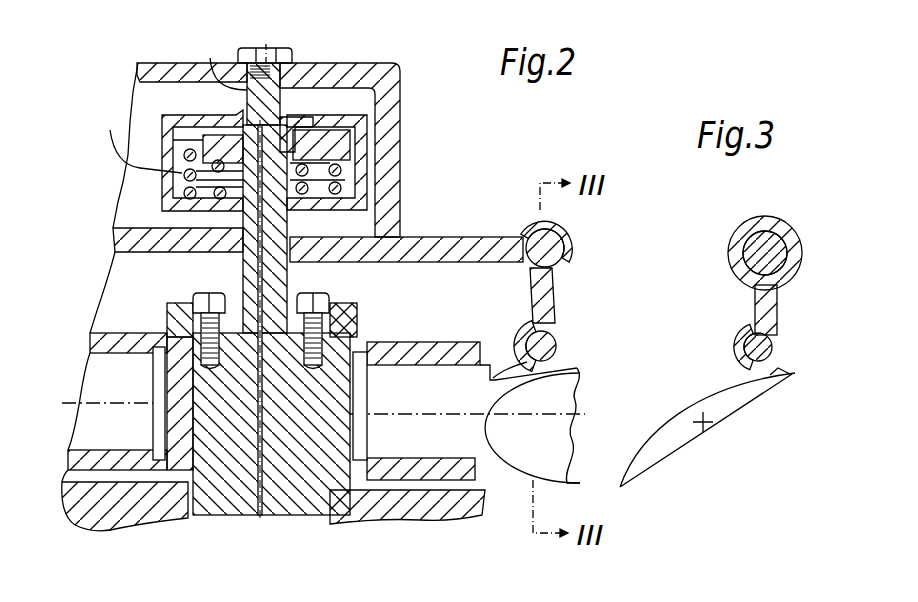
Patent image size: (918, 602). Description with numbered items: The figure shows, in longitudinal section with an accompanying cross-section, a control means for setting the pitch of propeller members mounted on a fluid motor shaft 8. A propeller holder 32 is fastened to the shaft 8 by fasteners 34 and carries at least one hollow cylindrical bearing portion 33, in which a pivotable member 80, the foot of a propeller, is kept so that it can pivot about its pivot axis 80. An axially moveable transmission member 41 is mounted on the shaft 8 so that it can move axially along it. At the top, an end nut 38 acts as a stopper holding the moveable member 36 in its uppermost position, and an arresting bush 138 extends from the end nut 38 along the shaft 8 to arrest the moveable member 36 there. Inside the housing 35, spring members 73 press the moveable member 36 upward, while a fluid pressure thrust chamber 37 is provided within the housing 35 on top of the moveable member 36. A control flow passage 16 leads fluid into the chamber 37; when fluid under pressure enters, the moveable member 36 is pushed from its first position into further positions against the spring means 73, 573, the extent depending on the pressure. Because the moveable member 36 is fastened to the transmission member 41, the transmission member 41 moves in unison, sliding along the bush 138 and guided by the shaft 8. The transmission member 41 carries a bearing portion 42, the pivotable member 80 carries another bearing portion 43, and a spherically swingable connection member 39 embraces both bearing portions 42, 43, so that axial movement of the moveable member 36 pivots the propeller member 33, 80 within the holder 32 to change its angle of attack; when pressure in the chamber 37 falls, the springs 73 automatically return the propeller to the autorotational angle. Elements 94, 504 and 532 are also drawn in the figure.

In FIG. 2, the shaft 8 is at (302, 515).
In FIG. 2, the control flow passage 16 is at (253, 513).
In FIG. 2, the propeller holder 32 is at (400, 350).
In FIG. 2, the bearing portion 33 is at (95, 367).
In FIG. 3, the bearing portion 33 is at (727, 393).
In FIG. 2, the fasteners 34 is at (313, 300).
In FIG. 2, the housing 35 is at (362, 176).
In FIG. 2, the axially moveable member 36 is at (350, 143).
In FIG. 2, the fluid pressure thrust chamber 37 is at (340, 117).
In FIG. 2, the end nut 38 is at (292, 78).
In FIG. 2, the connection member 39 is at (552, 303).
In FIG. 3, the connection member 39 is at (757, 302).
In FIG. 2, the transmission member 41 is at (440, 252).
In FIG. 2, the bearing portion 42 is at (548, 247).
In FIG. 3, the bearing portion 42 is at (750, 252).
In FIG. 2, the bearing portion 43 is at (556, 345).
In FIG. 3, the bearing portion 43 is at (750, 343).
In FIG. 2, the spring member 73 is at (195, 205).
In FIG. 2, the pivotable member 80 is at (98, 402).
In FIG. 3, the pivotable member 80 is at (696, 418).
In FIG. 2, the base 94 is at (156, 505).
In FIG. 2, the arresting bush 138 is at (218, 62).
In FIG. 2, the bushing 504 is at (293, 145).
In FIG. 2, the plates 532 is at (93, 430).
In FIG. 2, the spring means 573 is at (137, 135).